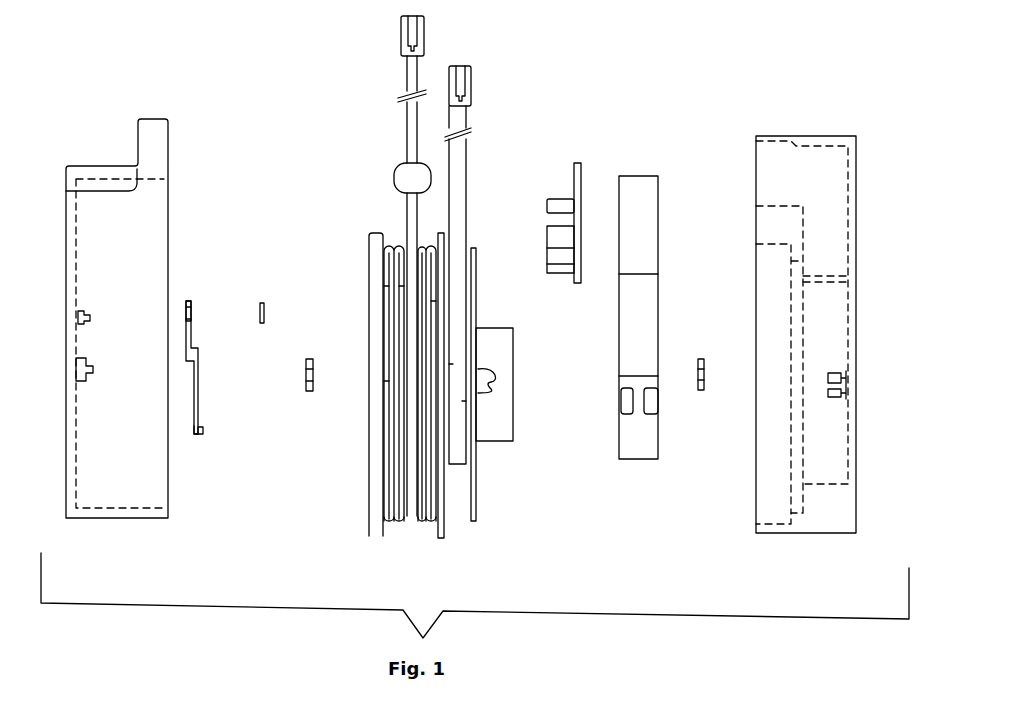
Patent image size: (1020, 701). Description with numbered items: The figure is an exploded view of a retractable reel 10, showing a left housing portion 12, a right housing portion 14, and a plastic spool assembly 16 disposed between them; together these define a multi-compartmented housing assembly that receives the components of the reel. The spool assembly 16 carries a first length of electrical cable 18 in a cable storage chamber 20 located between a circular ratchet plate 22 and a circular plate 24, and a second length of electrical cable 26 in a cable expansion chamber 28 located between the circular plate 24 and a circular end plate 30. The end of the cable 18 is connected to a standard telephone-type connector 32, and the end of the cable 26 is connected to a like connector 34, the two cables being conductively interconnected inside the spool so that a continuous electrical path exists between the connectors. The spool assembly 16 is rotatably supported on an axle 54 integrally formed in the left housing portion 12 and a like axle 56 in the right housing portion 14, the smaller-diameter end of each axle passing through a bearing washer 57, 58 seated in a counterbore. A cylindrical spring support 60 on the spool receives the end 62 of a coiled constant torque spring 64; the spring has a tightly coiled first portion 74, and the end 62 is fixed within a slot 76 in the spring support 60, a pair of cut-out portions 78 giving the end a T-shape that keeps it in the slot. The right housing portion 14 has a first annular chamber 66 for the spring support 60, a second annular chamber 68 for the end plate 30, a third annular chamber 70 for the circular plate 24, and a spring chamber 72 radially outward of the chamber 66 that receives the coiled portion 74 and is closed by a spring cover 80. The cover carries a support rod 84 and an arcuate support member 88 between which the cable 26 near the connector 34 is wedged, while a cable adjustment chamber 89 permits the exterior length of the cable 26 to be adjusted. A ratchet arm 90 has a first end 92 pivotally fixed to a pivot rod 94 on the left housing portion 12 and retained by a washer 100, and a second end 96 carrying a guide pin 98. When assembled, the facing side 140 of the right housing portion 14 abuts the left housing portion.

The retractable reel 10 is at (186, 72).
The left housing portion 12 is at (160, 112).
The right housing portion 14 is at (796, 128).
The plastic spool assembly 16 is at (352, 162).
The first length of electrical cable 18 is at (408, 218).
The cable storage chamber 20 is at (402, 533).
The circular ratchet plate 22 is at (368, 258).
The circular plate 24 is at (440, 540).
The second length of electrical cable 26 is at (466, 113).
The cable expansion chamber 28 is at (456, 478).
The circular end plate 30 is at (476, 506).
The RJ-11 connector 32 is at (400, 48).
The RJ-11 connector 34 is at (470, 72).
The axle 54 is at (84, 358).
The axle 56 is at (850, 366).
The bearing washer 57 is at (309, 358).
The bearing washer 58 is at (701, 358).
The cylindrical spring support 60 is at (500, 327).
The end of spring 62 is at (630, 375).
The coiled constant torque spring 64 is at (636, 175).
The first annular chamber 66 is at (855, 500).
The second annular chamber 68 is at (813, 530).
The third annular chamber 70 is at (766, 532).
The spring chamber 72 is at (834, 181).
The first portion of spring 74 is at (645, 240).
The slot 76 is at (493, 392).
The cut-out portions 78 is at (624, 398).
The spring cover 80 is at (582, 158).
The support rod 84 is at (564, 198).
The arcuate support member 88 is at (547, 268).
The cable adjustment chamber 89 is at (756, 180).
The ratchet arm 90 is at (197, 362).
The first end of ratchet arm 92 is at (189, 300).
The pivot rod 94 is at (84, 311).
The second end of ratchet arm 96 is at (195, 433).
The guide pin 98 is at (201, 426).
The washer 100 is at (261, 302).
The facing side 140 is at (755, 528).